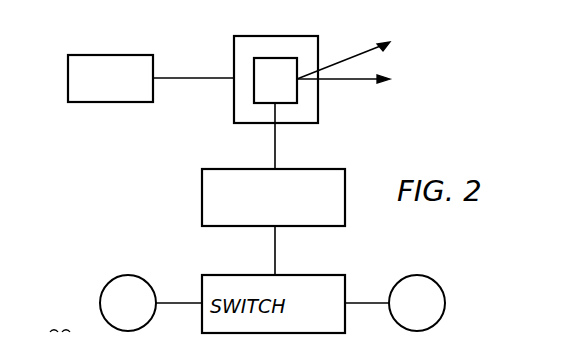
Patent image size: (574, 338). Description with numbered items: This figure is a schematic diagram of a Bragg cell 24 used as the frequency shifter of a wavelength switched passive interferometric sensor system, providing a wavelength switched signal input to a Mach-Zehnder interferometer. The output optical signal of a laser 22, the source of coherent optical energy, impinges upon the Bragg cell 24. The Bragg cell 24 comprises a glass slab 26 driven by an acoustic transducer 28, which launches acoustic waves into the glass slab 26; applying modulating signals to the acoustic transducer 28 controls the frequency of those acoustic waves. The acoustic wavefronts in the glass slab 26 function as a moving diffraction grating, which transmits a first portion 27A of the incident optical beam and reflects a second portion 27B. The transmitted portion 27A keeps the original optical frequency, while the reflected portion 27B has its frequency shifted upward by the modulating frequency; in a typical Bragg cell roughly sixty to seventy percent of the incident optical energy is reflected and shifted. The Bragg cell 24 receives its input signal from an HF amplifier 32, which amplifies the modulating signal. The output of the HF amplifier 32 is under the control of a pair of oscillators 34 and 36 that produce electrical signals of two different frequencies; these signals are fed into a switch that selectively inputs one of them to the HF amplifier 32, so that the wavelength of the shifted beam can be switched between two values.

The laser 22 is at (100, 103).
The Bragg cell 24 is at (420, 61).
The glass slab 26 is at (318, 110).
The first portion of the incident optical beam 27A is at (373, 83).
The second portion of the incident optical beam 27B is at (355, 52).
The acoustic transducer 28 is at (262, 58).
The HF amplifier 32 is at (202, 183).
The oscillator 34 is at (107, 282).
The oscillator 36 is at (440, 282).